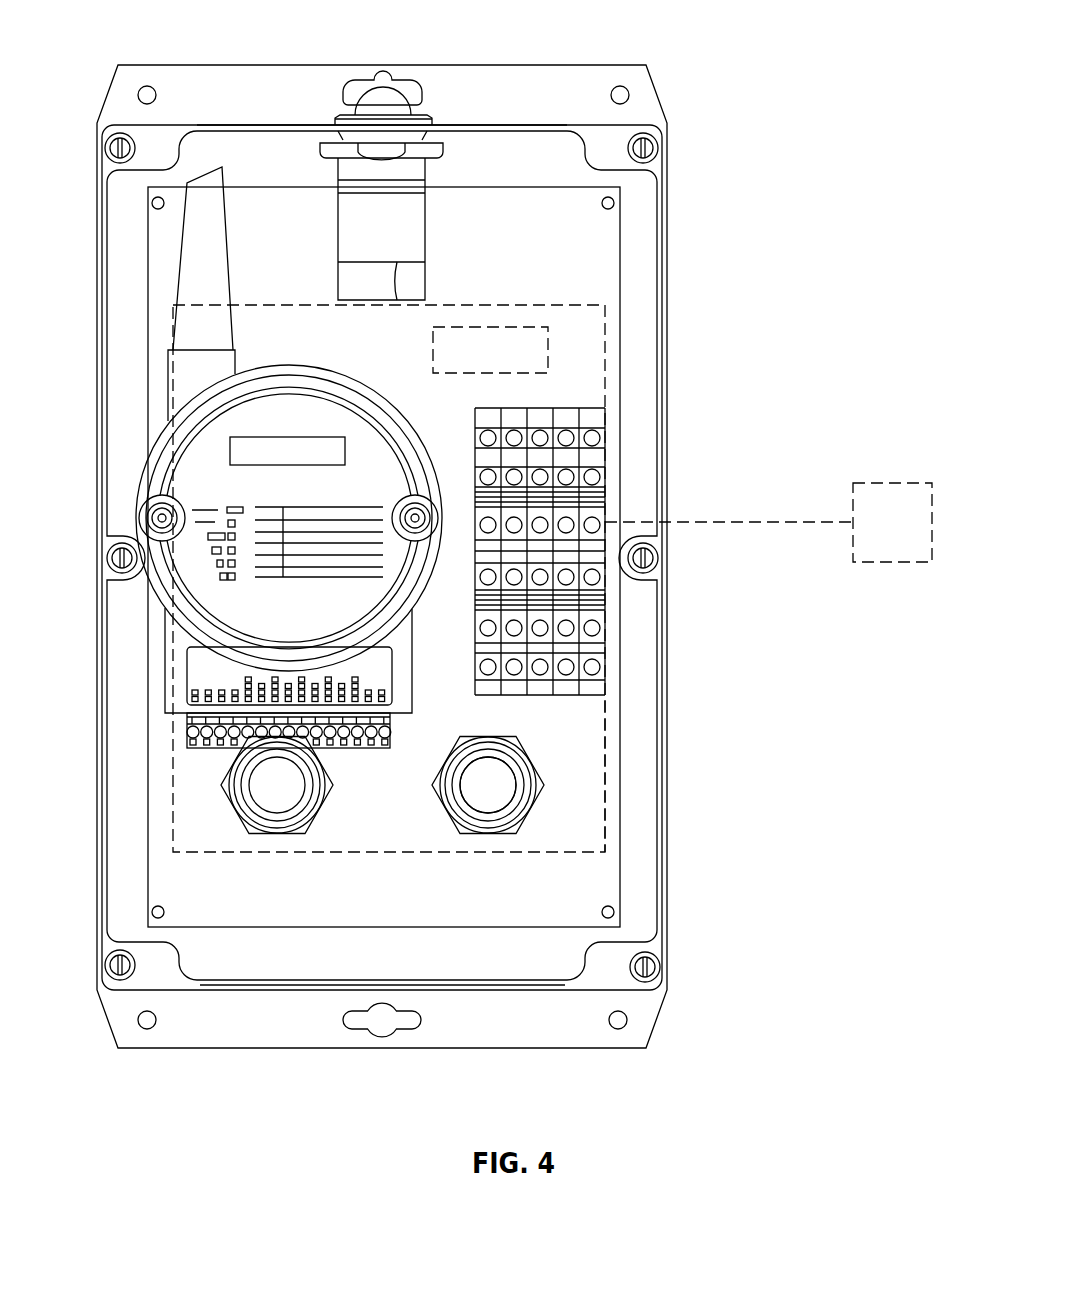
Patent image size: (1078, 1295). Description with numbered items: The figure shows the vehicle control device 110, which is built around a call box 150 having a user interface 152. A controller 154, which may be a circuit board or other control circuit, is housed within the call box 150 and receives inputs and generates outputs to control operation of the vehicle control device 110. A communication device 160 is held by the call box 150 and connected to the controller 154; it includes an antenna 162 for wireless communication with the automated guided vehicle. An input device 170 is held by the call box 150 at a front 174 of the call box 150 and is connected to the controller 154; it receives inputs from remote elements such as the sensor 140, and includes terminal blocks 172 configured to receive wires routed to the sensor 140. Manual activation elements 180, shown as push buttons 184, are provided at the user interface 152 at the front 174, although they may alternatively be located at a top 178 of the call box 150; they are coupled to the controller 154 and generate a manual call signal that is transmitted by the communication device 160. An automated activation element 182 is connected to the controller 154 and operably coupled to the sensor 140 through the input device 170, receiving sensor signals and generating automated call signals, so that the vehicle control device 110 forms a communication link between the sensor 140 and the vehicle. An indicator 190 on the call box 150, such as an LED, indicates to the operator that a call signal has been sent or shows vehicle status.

The vehicle control device 110 is at (728, 50).
The sensor 140 is at (877, 483).
The call box 150 is at (640, 340).
The user interface 152 is at (168, 820).
The controller 154 is at (605, 790).
The communication device 160 is at (207, 595).
The antenna 162 is at (193, 268).
The input device 170 is at (592, 506).
The terminal blocks 172 is at (588, 628).
The front 174 is at (593, 242).
The top 178 is at (490, 125).
The manual activation elements 180 is at (282, 802).
The automated activation element 182 is at (548, 340).
The push buttons 184 is at (510, 790).
The indicator 190 is at (380, 106).